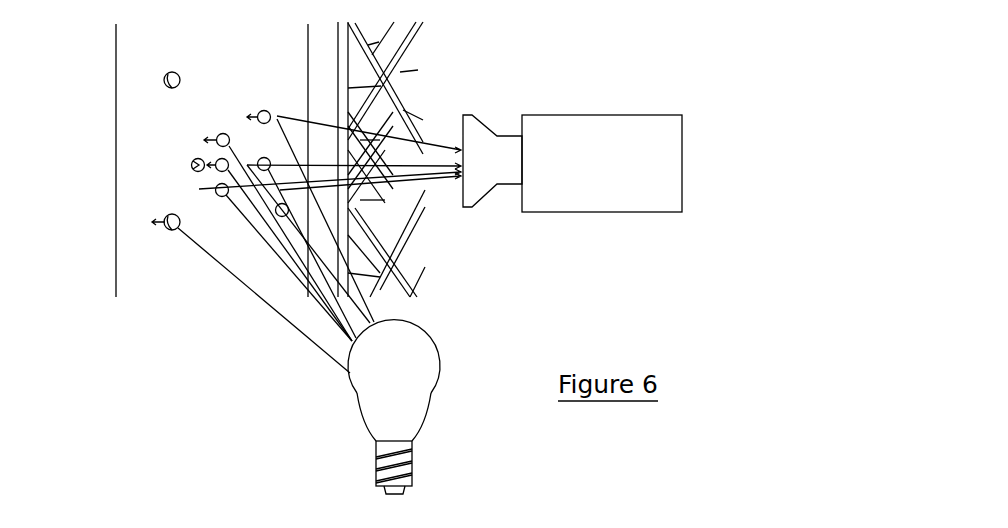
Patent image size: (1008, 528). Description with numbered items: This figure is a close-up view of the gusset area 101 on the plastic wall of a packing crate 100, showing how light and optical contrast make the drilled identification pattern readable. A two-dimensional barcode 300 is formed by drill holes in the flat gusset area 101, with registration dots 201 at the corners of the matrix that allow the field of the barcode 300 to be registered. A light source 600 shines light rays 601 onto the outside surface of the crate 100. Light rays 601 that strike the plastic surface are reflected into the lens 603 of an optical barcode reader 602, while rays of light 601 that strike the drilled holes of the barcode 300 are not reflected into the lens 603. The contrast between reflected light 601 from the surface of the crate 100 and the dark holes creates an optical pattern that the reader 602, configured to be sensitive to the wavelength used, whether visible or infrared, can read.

The packing crate 100 is at (457, 41).
The structural gusset area 101 is at (140, 285).
The dots 201 is at (164, 76).
The barcode 300 is at (168, 148).
The light source 600 is at (437, 332).
The light rays 601 is at (273, 312).
The optical barcode reader 602 is at (682, 132).
The lens 603 is at (482, 202).